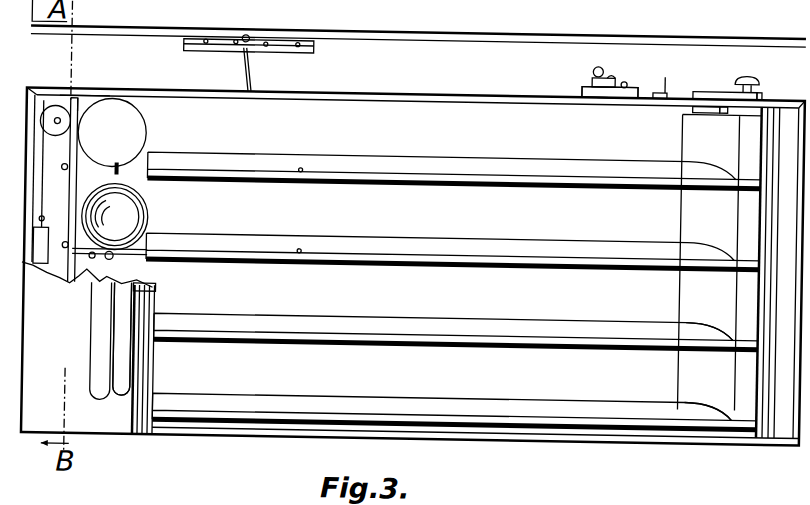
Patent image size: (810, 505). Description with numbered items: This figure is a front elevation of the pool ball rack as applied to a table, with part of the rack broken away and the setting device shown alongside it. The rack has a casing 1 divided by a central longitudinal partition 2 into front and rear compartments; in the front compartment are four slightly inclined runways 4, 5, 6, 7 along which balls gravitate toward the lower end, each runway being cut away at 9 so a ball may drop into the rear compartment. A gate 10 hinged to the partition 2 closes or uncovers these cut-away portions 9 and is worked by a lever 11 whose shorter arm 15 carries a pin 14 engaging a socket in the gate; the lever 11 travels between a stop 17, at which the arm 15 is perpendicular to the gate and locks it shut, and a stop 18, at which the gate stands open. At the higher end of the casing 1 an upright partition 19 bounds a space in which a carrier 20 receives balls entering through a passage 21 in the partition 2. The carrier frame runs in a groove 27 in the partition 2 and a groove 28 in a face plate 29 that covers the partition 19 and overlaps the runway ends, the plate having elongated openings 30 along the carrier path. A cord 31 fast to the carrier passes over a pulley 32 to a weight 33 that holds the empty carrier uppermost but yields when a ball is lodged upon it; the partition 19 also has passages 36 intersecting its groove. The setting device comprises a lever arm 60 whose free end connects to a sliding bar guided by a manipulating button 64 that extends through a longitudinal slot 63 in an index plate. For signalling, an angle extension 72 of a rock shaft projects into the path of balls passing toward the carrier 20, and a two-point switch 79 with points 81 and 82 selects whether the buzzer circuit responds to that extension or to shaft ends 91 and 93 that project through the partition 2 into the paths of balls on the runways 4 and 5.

The casing 1 is at (439, 88).
The central longitudinal partition 2 is at (541, 118).
The runway 4 is at (429, 165).
The runway 5 is at (524, 247).
The runway 6 is at (574, 329).
The runway 7 is at (568, 415).
The cut-away portion 9 is at (722, 330).
The door or gate 10 is at (692, 141).
The lever 11 is at (712, 80).
The pin 14 is at (721, 97).
The shorter arm 15 is at (731, 98).
The stop 17 is at (761, 80).
The stop 18 is at (612, 68).
The upright partition 19 is at (68, 96).
The carrier 20 is at (79, 237).
The passage 21 is at (115, 122).
The groove 27 is at (98, 94).
The groove 28 is at (83, 340).
The face plate 29 is at (121, 425).
The elongated openings 30 is at (131, 353).
The cord or strand 31 is at (46, 152).
The pulley 32 is at (40, 108).
The weight 33 is at (43, 265).
The passages 36 is at (92, 259).
The lever arm 60 is at (249, 78).
The longitudinal slot 63 is at (200, 47).
The manipulating button 64 is at (256, 48).
The angle extension 72 is at (748, 64).
The switch 79 is at (589, 78).
The switch point 81 is at (624, 77).
The switch point 82 is at (599, 75).
The end of rock shaft 91 is at (303, 163).
The end of rock shaft 93 is at (302, 243).